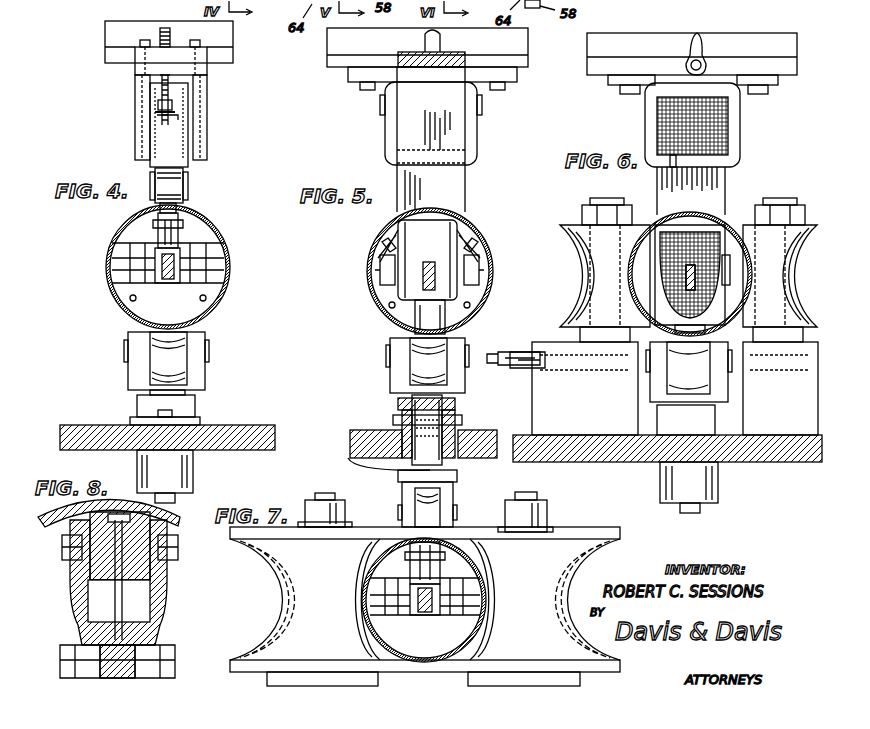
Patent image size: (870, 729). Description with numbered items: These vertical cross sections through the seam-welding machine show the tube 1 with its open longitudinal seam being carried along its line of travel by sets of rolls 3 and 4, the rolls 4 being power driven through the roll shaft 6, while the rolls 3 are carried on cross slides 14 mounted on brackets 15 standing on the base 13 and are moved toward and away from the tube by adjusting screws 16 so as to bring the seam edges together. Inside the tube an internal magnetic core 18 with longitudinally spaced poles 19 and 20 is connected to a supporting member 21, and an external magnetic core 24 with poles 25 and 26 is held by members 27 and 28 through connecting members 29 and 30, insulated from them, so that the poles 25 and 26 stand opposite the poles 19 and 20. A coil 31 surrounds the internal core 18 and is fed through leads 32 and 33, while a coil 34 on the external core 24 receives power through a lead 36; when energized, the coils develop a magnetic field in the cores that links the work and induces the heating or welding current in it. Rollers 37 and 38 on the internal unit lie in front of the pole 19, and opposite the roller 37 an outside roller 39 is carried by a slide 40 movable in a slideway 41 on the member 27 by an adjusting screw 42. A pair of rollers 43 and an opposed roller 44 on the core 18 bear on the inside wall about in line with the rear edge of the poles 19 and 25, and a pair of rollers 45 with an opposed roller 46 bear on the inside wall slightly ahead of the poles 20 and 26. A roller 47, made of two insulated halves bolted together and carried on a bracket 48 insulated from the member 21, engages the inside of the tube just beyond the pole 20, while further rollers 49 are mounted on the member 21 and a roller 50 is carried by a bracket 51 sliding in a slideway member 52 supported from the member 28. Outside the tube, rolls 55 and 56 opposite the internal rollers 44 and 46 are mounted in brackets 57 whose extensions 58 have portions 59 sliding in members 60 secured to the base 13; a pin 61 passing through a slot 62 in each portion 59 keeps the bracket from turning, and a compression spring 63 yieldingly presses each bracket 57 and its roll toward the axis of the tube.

In FIG. 4, the tube 1 is at (226, 240).
In FIG. 8, the tube 1 is at (60, 530).
In FIG. 5, the tube 1 is at (486, 237).
In FIG. 6, the tube 1 is at (725, 220).
In FIG. 7, the tube 1 is at (488, 587).
In FIG. 6, the rolls 3 is at (585, 228).
In FIG. 7, the rolls 4 is at (265, 553).
In FIG. 7, the roll shaft 6 is at (326, 496).
In FIG. 4, the base 13 is at (72, 425).
In FIG. 5, the base 13 is at (357, 430).
In FIG. 6, the base 13 is at (776, 462).
In FIG. 5, the cross slides 14 is at (530, 320).
In FIG. 6, the cross slides 14 is at (575, 333).
In FIG. 6, the brackets 15 is at (608, 440).
In FIG. 5, the adjusting screws 16 is at (490, 367).
In FIG. 6, the internal magnetic core 18 is at (664, 270).
In FIG. 5, the pole 19 is at (420, 228).
In FIG. 6, the pole 20 is at (660, 222).
In FIG. 4, the member 21 is at (174, 280).
In FIG. 8, the member 21 is at (75, 638).
In FIG. 5, the member 21 is at (437, 272).
In FIG. 6, the member 21 is at (660, 288).
In FIG. 7, the member 21 is at (425, 614).
In FIG. 6, the external magnetic core 24 is at (728, 130).
In FIG. 5, the pole 25 is at (468, 202).
In FIG. 6, the pole 26 is at (703, 206).
In FIG. 4, the member 27 is at (112, 52).
In FIG. 5, the member 27 is at (341, 62).
In FIG. 6, the member 28 is at (592, 62).
In FIG. 5, the connecting member 29 is at (355, 86).
In FIG. 6, the connecting member 30 is at (616, 87).
In FIG. 5, the coil 31 is at (392, 270).
In FIG. 6, the coil 31 is at (732, 280).
In FIG. 4, the lead 32 is at (128, 300).
In FIG. 5, the lead 32 is at (388, 310).
In FIG. 4, the lead 33 is at (209, 298).
In FIG. 5, the lead 33 is at (472, 309).
In FIG. 5, the coil 34 is at (388, 137).
In FIG. 6, the coil 34 is at (647, 126).
In FIG. 6, the lead 36 is at (694, 42).
In FIG. 4, the roller 37 is at (180, 213).
In FIG. 4, the roller 38 is at (116, 262).
In FIG. 4, the roller 39 is at (183, 186).
In FIG. 4, the slide 40 is at (180, 140).
In FIG. 4, the slideway 41 is at (178, 106).
In FIG. 4, the adjusting screw 42 is at (163, 100).
In FIG. 5, the rollers 43 is at (380, 246).
In FIG. 5, the roller 44 is at (410, 332).
In FIG. 6, the rollers 45 is at (575, 245).
In FIG. 6, the roller 46 is at (745, 330).
In FIG. 8, the roller 47 is at (142, 578).
In FIG. 8, the bracket 48 is at (78, 590).
In FIG. 7, the rollers 49 is at (456, 537).
In FIG. 7, the roller 50 is at (415, 510).
In FIG. 7, the bracket 51 is at (452, 498).
In FIG. 7, the slideway member 52 is at (398, 477).
In FIG. 4, the roll 55 is at (150, 350).
In FIG. 5, the roll 55 is at (415, 356).
In FIG. 6, the roll 56 is at (728, 389).
In FIG. 4, the bracket 57 is at (203, 384).
In FIG. 5, the bracket 57 is at (456, 388).
In FIG. 6, the bracket 57 is at (650, 389).
In FIG. 4, the extension 58 is at (150, 392).
In FIG. 5, the extension 58 is at (400, 405).
In FIG. 6, the extension 58 is at (700, 510).
In FIG. 5, the portion 59 is at (455, 420).
In FIG. 4, the member 60 is at (195, 468).
In FIG. 5, the member 60 is at (444, 459).
In FIG. 6, the member 60 is at (662, 484).
In FIG. 5, the pin 61 is at (395, 422).
In FIG. 5, the slot 62 is at (466, 440).
In FIG. 5, the compression spring 63 is at (350, 458).